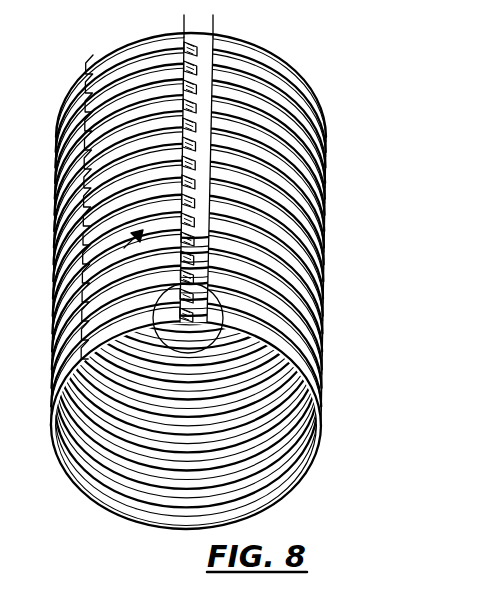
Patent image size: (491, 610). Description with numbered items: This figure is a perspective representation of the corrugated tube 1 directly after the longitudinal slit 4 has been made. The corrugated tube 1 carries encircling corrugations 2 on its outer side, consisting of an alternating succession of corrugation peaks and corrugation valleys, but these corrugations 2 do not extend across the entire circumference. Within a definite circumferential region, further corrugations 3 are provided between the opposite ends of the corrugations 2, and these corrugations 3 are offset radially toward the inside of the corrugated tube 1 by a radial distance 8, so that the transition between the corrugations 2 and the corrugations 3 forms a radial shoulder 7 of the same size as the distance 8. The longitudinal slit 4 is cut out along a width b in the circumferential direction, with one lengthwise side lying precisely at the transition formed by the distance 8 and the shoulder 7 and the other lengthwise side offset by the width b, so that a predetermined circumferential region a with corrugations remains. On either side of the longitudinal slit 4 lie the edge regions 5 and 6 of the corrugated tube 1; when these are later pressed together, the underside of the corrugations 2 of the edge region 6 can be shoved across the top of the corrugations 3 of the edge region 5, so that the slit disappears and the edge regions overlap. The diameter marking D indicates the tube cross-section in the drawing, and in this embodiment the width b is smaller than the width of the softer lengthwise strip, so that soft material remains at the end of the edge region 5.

The corrugated tube 1 is at (47, 137).
The corrugations 2 is at (250, 107).
The corrugations 3 is at (112, 104).
The longitudinal slit 4 is at (200, 44).
The edge region 5 is at (57, 312).
The edge region 6 is at (245, 190).
The radial shoulder 7 is at (88, 244).
The radial distance 8 is at (88, 365).
The inner diameter D is at (221, 300).
The circumferential region a is at (181, 31).
The width of the longitudinal slit b is at (213, 22).